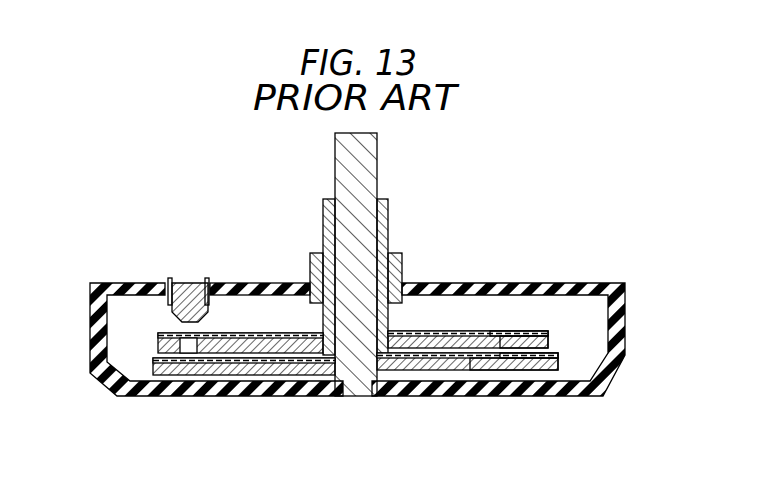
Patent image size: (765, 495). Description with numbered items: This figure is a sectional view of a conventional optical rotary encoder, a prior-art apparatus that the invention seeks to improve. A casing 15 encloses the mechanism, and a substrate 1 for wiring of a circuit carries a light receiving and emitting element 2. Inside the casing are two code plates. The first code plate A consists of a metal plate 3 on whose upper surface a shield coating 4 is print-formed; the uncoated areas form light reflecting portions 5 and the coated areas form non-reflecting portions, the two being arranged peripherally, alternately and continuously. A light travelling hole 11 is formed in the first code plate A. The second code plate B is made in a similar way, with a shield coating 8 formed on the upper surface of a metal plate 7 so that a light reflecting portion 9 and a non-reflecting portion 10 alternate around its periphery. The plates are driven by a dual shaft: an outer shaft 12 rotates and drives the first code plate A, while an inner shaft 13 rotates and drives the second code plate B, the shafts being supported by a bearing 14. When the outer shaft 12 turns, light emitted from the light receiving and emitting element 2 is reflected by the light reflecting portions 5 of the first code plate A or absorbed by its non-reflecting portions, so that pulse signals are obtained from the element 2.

The substrate 1 is at (445, 283).
The light receiving and emitting element 2 is at (193, 300).
The metal plate 3 is at (530, 336).
The shield coating 4 is at (462, 331).
The light reflecting portion 5 is at (510, 331).
The metal plate 7 is at (531, 371).
The shield coating 8 is at (413, 364).
The light reflecting portion 9 is at (497, 371).
The non-reflecting portion 10 is at (190, 376).
The light travelling hole 11 is at (183, 342).
The outer shaft 12 is at (324, 215).
The inner shaft 13 is at (340, 167).
The bearing 14 is at (316, 262).
The casing 15 is at (620, 362).
The first code plate A is at (555, 337).
The second code plate B is at (565, 365).